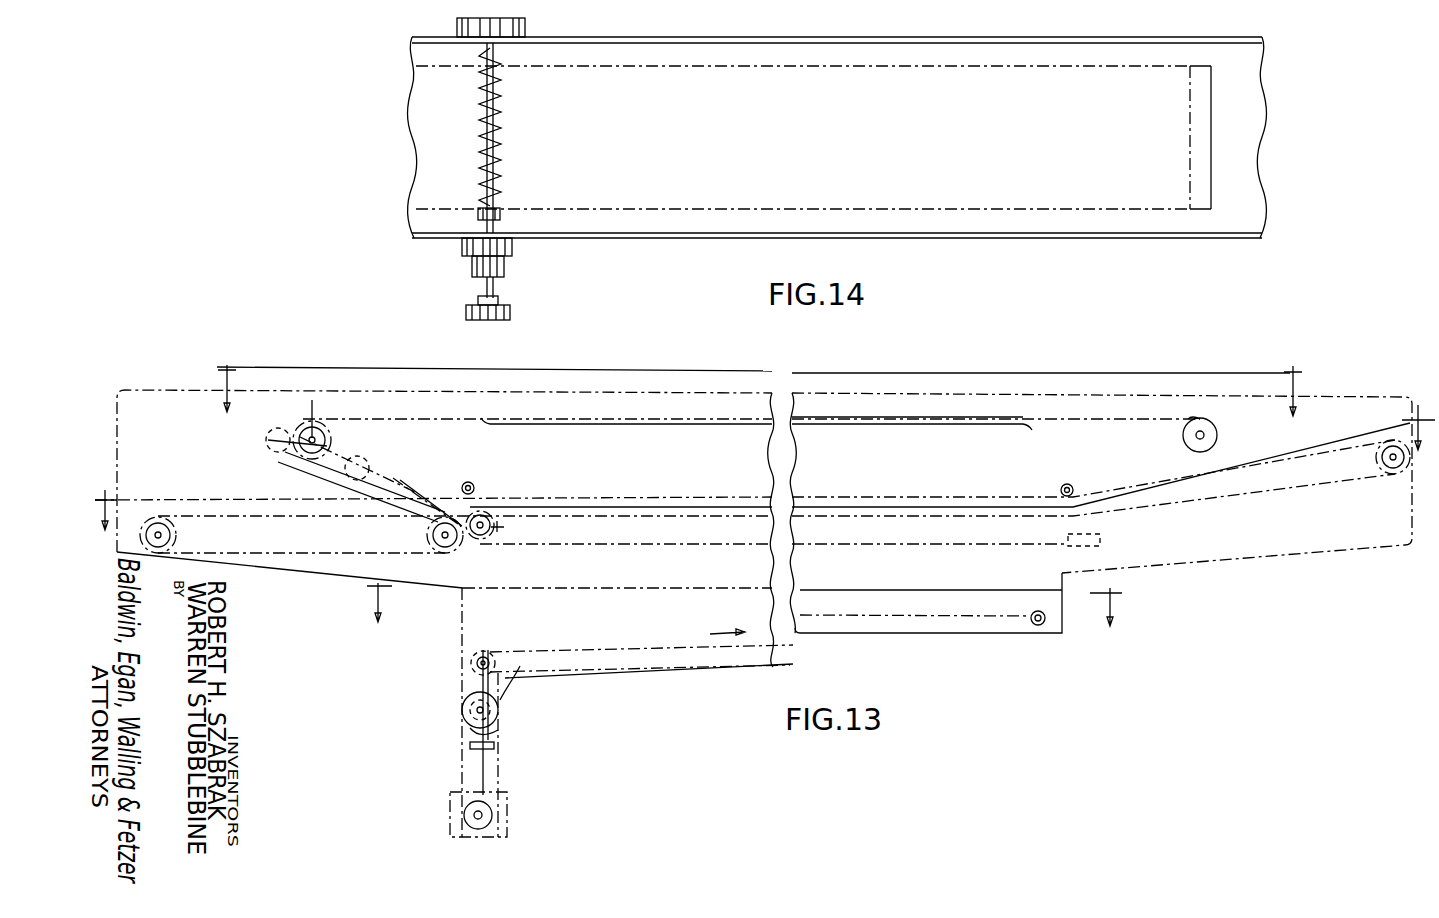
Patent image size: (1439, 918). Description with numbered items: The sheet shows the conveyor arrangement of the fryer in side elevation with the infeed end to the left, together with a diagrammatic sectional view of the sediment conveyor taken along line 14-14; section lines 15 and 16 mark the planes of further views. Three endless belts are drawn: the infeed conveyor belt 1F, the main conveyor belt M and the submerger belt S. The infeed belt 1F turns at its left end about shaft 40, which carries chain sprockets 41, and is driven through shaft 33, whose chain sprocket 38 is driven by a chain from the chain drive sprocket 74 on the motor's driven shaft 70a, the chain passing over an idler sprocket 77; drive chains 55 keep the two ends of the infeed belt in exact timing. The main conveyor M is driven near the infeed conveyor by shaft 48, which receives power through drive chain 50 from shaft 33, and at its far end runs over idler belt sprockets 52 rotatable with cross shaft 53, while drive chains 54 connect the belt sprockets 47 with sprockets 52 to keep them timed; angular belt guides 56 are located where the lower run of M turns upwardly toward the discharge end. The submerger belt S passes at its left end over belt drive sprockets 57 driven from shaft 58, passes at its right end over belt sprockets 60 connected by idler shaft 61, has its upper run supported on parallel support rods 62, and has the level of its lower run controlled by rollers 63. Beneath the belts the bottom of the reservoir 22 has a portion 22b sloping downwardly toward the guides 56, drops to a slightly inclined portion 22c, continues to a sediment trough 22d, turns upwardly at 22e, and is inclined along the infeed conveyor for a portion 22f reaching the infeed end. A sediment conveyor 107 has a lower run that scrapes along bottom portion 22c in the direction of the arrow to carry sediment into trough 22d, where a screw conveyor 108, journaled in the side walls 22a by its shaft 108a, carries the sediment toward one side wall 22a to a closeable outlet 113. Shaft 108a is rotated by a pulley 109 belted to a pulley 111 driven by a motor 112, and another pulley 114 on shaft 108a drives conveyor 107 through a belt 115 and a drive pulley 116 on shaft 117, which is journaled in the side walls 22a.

In FIG. 14, the reservoir 22 is at (939, 54).
In FIG. 13, the side walls 22a is at (186, 397).
In FIG. 13, the bottom portion at discharge end 22b is at (1293, 555).
In FIG. 13, the inclined bottom portion 22c is at (975, 636).
In FIG. 13, the sediment trough 22d is at (512, 718).
In FIG. 13, the upturned bottom portion 22e is at (463, 598).
In FIG. 13, the inclined bottom portion along infeed conveyor 22f is at (272, 570).
In FIG. 14, the sediment conveyor 107 is at (765, 66).
In FIG. 13, the sediment conveyor 107 is at (620, 650).
In FIG. 14, the screw conveyor 108 is at (494, 162).
In FIG. 13, the screw conveyor 108 is at (500, 700).
In FIG. 13, the shaft 108a is at (494, 738).
In FIG. 14, the pulley 109 is at (510, 318).
In FIG. 13, the pulley 109 is at (462, 712).
In FIG. 13, the pulley 111 is at (465, 815).
In FIG. 13, the motor 112 is at (500, 818).
In FIG. 13, the closeable outlet 113 is at (486, 761).
In FIG. 14, the pulley 114 is at (500, 302).
In FIG. 13, the pulley 114 is at (478, 689).
In FIG. 13, the belt 115 is at (520, 666).
In FIG. 13, the drive pulley 116 is at (508, 641).
In FIG. 14, the shaft 117 is at (508, 280).
In FIG. 13, the shaft 117 is at (470, 662).
In FIG. 13, the shaft 40 is at (163, 530).
In FIG. 13, the chain sprockets 41 is at (147, 520).
In FIG. 13, the drive chains 55 is at (270, 517).
In FIG. 13, the drive chains 54 is at (666, 545).
In FIG. 13, the belt drive sprockets 57 is at (323, 426).
In FIG. 13, the shaft 58 is at (312, 404).
In FIG. 13, the chain drive sprocket 74 is at (280, 426).
In FIG. 13, the driven shaft 70a is at (268, 442).
In FIG. 13, the idler sprocket 77 is at (382, 464).
In FIG. 13, the shaft 33 is at (430, 530).
In FIG. 13, the chain sprocket 38 is at (445, 553).
In FIG. 13, the belt sprockets 47 is at (484, 543).
In FIG. 13, the shaft 48 is at (504, 528).
In FIG. 13, the drive chain 50 is at (440, 495).
In FIG. 13, the rollers 63 is at (476, 487).
In FIG. 13, the support rods 62 is at (918, 426).
In FIG. 13, the belt sprockets 60 is at (1209, 418).
In FIG. 13, the idler shaft 61 is at (1218, 442).
In FIG. 13, the idler belt sprockets 52 is at (1377, 462).
In FIG. 13, the cross shaft 53 is at (1396, 474).
In FIG. 13, the angular belt guides 56 is at (1104, 532).
In FIG. 13, the submerger belt S is at (1082, 422).
In FIG. 13, the main conveyor belt M is at (1240, 512).
In FIG. 13, the infeed conveyor belt 1F is at (341, 568).
In FIG. 13, the section line 14- 14 is at (744, 616).
In FIG. 13, the section line 15- 15 is at (765, 449).
In FIG. 13, the section line 16- 16 is at (762, 376).